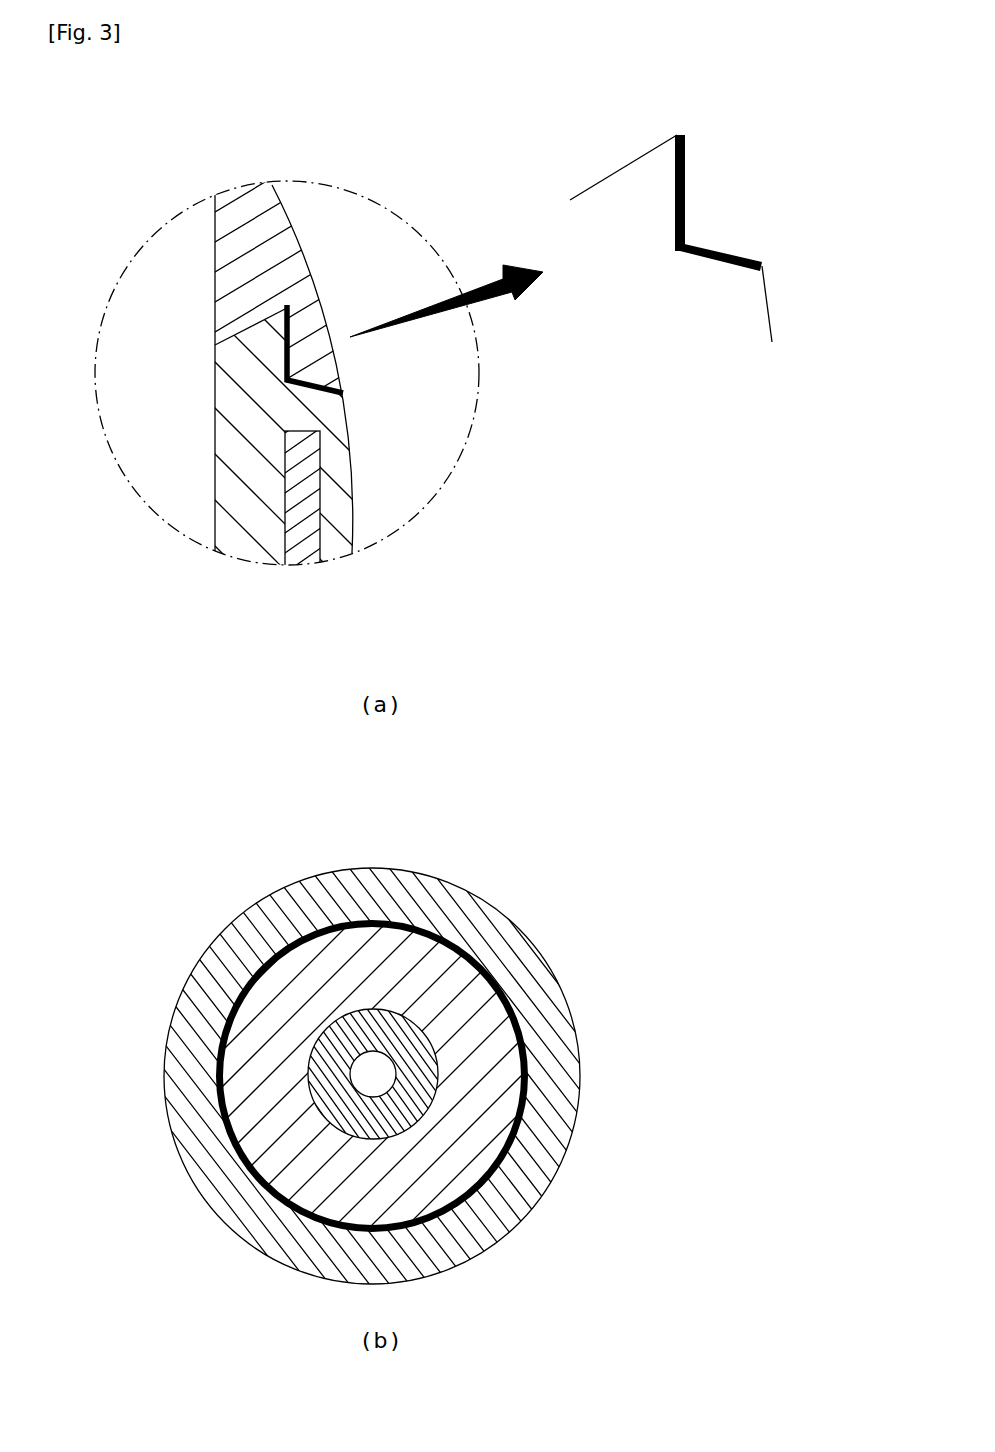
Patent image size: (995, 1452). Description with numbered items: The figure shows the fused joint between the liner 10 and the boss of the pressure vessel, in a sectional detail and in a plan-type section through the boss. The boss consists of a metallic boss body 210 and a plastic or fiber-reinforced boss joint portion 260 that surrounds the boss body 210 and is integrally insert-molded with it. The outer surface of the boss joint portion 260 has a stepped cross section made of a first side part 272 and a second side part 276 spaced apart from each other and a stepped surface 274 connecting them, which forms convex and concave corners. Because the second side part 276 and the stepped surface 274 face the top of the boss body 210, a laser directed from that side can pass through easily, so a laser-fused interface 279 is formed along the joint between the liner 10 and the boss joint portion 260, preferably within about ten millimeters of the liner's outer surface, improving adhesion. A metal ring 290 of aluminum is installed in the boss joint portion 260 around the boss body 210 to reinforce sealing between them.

The liner 10 is at (290, 242).
The boss body 210 is at (350, 1023).
The boss joint portion 260 is at (338, 502).
The first side part 272 is at (612, 178).
The stepped surface 274 is at (675, 232).
The second side part 276 is at (723, 263).
The laser-fused interface 279 is at (685, 180).
The metal ring 290 is at (295, 517).